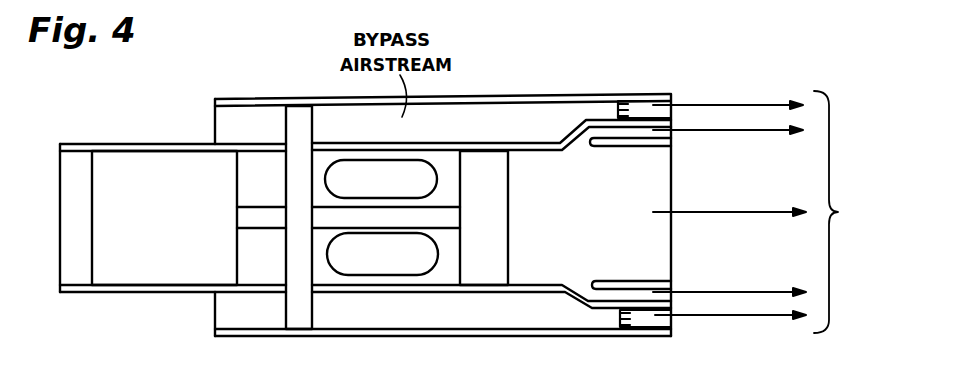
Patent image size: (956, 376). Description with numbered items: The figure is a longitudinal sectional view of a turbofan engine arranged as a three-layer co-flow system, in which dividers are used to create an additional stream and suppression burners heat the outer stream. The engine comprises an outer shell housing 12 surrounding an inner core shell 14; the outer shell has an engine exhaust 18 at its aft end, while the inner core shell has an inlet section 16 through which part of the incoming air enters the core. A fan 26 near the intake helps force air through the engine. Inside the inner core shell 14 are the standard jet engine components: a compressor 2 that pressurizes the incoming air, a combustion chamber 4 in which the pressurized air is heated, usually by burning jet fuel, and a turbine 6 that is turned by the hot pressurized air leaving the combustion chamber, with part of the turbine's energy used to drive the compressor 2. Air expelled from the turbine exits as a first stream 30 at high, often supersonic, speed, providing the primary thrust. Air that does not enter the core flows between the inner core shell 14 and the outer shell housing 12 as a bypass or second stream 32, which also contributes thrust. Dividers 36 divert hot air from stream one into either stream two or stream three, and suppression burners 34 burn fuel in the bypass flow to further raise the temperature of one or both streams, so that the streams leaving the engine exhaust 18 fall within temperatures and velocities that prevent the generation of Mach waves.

The compressor 2 is at (172, 254).
The combustion chamber 4 is at (392, 190).
The turbine 6 is at (488, 276).
The outer shell housing 12 is at (500, 93).
The inner core shell 14 is at (630, 148).
The inlet section 16 is at (67, 173).
The engine exhaust 18 is at (843, 212).
The fan 26 is at (298, 115).
The first stream 30 is at (757, 213).
The second stream 32 is at (757, 135).
The suppression burners 34 is at (641, 102).
The dividers 36 is at (583, 49).